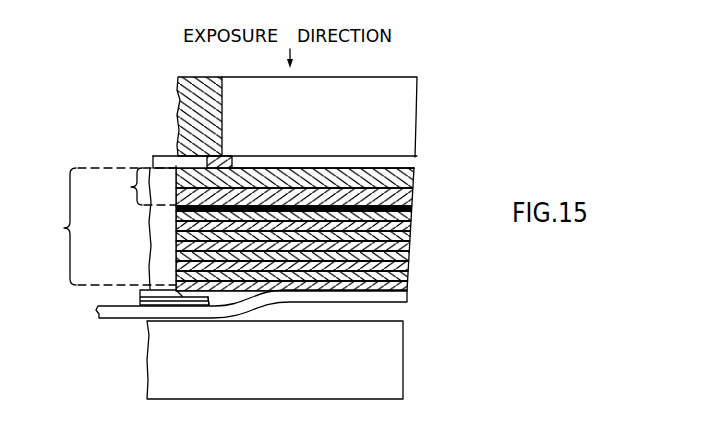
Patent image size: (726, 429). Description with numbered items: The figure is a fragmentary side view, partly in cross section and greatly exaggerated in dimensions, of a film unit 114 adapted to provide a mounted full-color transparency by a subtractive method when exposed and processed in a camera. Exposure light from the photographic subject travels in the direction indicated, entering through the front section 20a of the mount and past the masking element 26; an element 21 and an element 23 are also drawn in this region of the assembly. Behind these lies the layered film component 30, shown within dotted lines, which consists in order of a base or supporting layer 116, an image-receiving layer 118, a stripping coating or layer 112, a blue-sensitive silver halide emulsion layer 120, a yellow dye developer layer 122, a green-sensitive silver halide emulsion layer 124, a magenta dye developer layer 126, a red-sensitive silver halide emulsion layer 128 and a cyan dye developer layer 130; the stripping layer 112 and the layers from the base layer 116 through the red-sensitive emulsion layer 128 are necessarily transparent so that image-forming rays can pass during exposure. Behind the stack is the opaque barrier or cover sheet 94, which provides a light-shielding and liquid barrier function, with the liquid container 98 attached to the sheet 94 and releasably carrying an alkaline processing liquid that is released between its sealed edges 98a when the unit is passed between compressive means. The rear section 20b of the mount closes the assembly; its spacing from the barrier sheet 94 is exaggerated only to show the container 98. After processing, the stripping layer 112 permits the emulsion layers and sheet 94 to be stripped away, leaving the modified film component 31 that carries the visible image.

The film unit 114 is at (147, 120).
The front section of the mount 20a is at (178, 147).
The rear section of the mount 20b is at (396, 367).
The spacer 21 is at (150, 160).
The adhesive layer 23 is at (305, 158).
The masking element 26 is at (395, 163).
The film component 30 is at (221, 228).
The modified film component 31 is at (127, 186).
The opaque barrier sheet 94 is at (384, 302).
The liquid container 98 is at (140, 292).
The sealed edges 98a is at (210, 304).
The stripping layer 112 is at (412, 209).
The base layer 116 is at (412, 178).
The image-receiving layer 118 is at (412, 197).
The blue-sensitive silver halide emulsion layer 120 is at (412, 222).
The yellow dye developer layer 122 is at (412, 236).
The green-sensitive silver halide emulsion layer 124 is at (412, 247).
The magenta dye developer layer 126 is at (412, 261).
The red-sensitive silver halide emulsion layer 128 is at (411, 272).
The cyan dye developer layer 130 is at (410, 289).